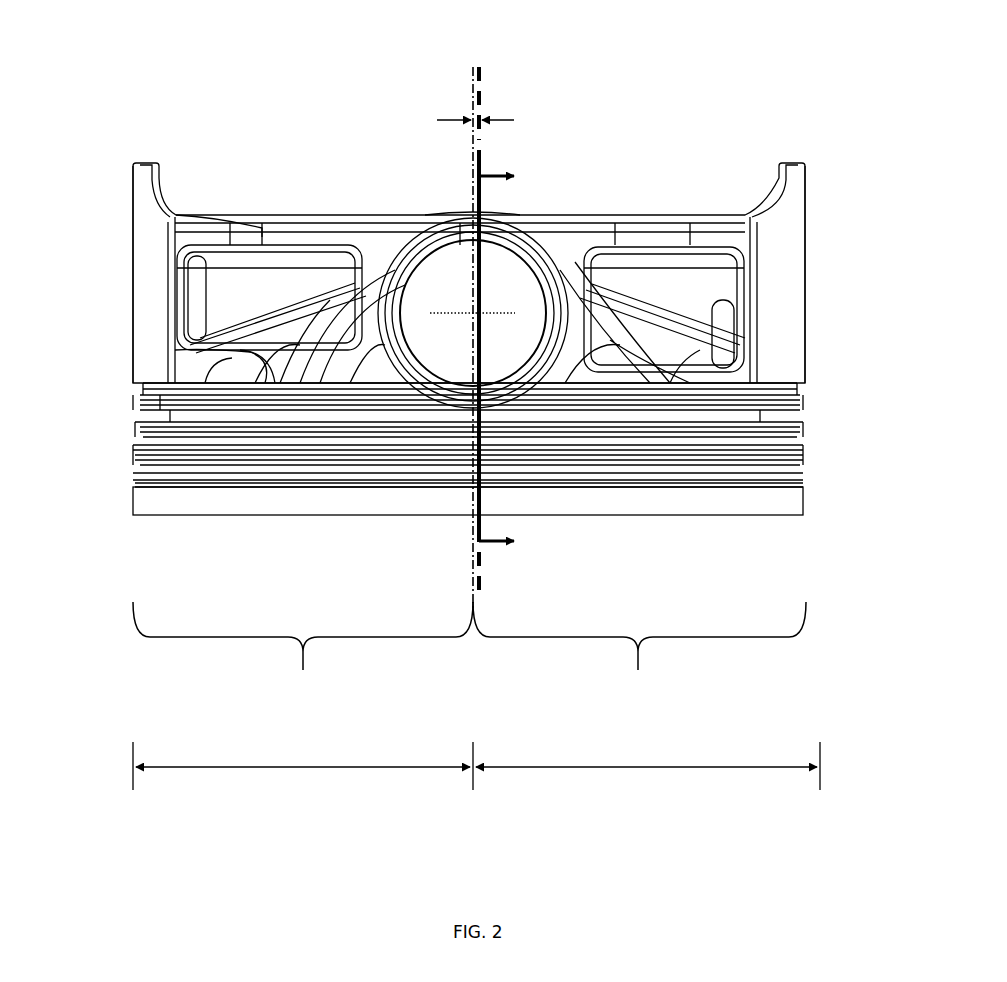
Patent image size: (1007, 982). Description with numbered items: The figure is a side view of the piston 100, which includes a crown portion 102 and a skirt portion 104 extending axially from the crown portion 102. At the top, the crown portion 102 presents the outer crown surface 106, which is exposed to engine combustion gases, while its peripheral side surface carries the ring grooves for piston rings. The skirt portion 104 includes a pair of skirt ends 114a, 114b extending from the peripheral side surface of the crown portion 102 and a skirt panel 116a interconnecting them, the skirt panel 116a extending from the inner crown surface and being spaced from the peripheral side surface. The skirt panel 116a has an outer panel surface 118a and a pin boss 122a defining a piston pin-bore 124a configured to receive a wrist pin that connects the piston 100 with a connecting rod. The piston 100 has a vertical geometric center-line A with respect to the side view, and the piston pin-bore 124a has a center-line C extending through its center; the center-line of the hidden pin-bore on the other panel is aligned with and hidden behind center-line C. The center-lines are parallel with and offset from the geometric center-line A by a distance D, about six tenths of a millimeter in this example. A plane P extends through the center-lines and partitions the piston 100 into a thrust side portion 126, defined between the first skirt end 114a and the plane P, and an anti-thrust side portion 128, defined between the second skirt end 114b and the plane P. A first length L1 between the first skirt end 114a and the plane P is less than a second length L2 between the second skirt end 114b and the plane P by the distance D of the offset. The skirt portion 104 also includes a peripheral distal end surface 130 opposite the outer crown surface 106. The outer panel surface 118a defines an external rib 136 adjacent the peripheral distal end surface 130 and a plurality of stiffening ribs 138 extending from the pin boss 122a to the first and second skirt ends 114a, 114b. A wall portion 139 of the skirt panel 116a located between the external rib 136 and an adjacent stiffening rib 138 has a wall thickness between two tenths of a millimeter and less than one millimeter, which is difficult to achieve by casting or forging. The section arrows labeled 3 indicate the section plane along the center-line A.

The piston 100 is at (678, 98).
The crown portion 102 is at (840, 405).
The skirt portion 104 is at (840, 159).
The outer crown surface 106 is at (237, 516).
The first skirt end 114a is at (128, 249).
The second skirt end 114b is at (812, 210).
The skirt panel 116a is at (186, 357).
The outer panel surface 118a is at (637, 370).
The pin boss 122a is at (550, 300).
The piston pin-bore 124a is at (500, 292).
The thrust side portion 126 is at (303, 651).
The anti-thrust side portion 128 is at (639, 651).
The peripheral distal end surface 130 is at (205, 218).
The external rib 136 is at (231, 237).
The stiffening ribs 138 is at (230, 330).
The wall portion 139 is at (263, 280).
The plane P is at (469, 67).
The vertical geometric center-line A is at (484, 67).
The distance D is at (514, 120).
The center-line C is at (470, 301).
The section line 3- 3 is at (505, 360).
The first length L1 is at (303, 780).
The second length L2 is at (648, 780).